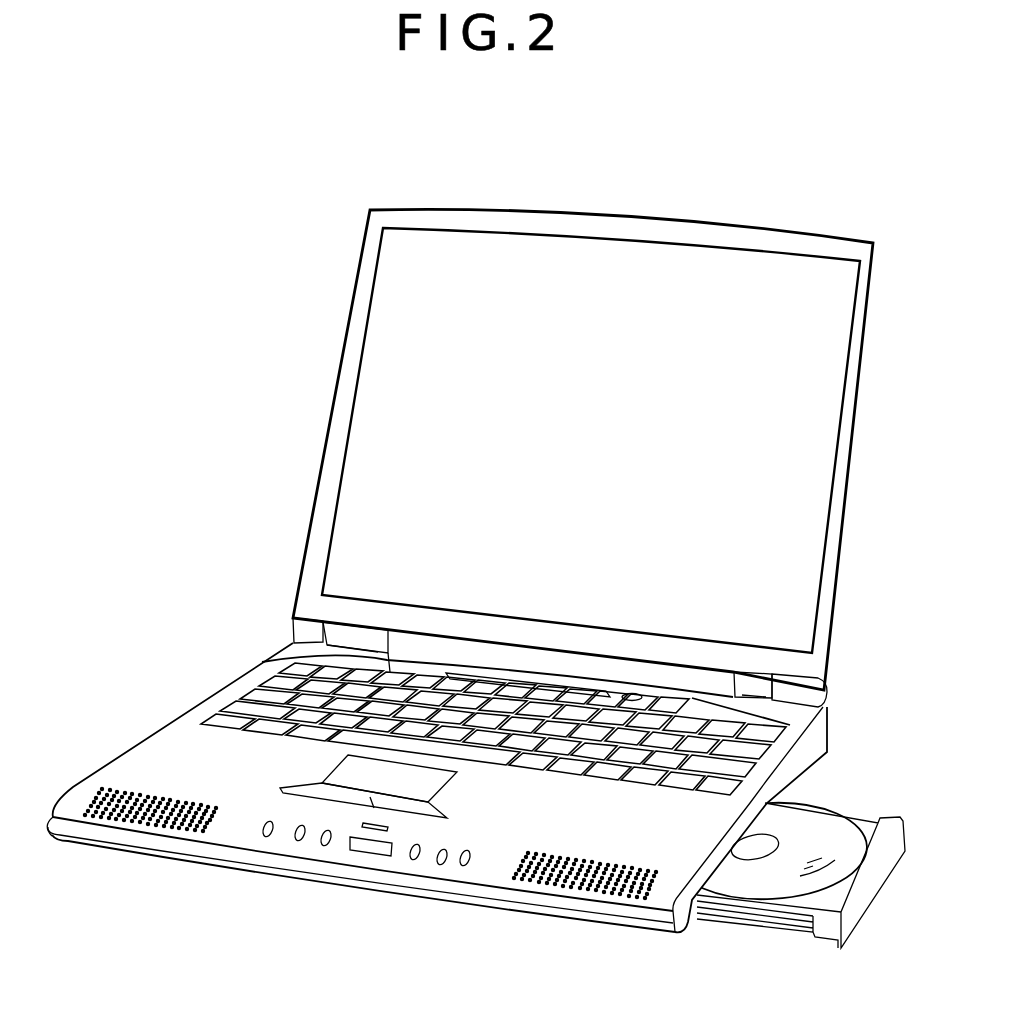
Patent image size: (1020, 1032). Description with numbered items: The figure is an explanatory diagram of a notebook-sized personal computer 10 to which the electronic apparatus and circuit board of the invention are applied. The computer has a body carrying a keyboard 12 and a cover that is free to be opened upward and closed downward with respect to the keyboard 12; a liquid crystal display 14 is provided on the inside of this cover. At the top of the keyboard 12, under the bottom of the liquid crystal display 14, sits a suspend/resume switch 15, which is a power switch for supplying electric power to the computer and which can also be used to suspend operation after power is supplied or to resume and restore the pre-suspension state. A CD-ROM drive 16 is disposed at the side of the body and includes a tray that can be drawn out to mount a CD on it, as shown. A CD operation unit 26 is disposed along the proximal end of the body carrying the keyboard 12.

The notebook-sized personal computer 10 is at (328, 272).
The keyboard 12 is at (258, 697).
The liquid crystal display 14 is at (681, 284).
The suspend/resume switch 15 is at (634, 694).
The CD-ROM drive 16 is at (702, 924).
The CD operation unit 26 is at (306, 852).